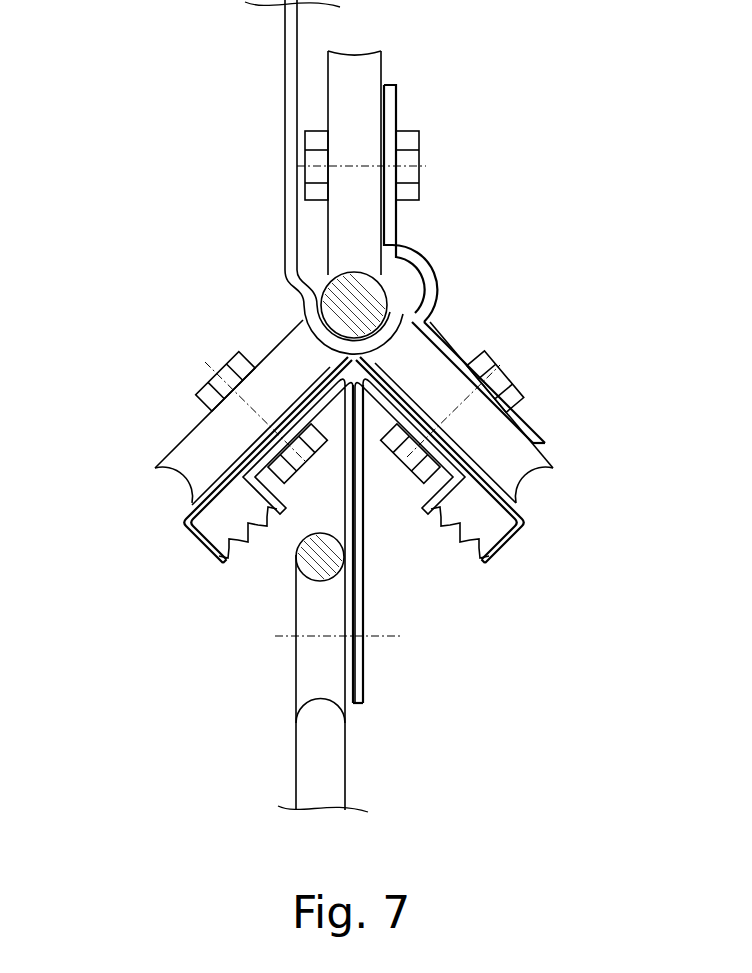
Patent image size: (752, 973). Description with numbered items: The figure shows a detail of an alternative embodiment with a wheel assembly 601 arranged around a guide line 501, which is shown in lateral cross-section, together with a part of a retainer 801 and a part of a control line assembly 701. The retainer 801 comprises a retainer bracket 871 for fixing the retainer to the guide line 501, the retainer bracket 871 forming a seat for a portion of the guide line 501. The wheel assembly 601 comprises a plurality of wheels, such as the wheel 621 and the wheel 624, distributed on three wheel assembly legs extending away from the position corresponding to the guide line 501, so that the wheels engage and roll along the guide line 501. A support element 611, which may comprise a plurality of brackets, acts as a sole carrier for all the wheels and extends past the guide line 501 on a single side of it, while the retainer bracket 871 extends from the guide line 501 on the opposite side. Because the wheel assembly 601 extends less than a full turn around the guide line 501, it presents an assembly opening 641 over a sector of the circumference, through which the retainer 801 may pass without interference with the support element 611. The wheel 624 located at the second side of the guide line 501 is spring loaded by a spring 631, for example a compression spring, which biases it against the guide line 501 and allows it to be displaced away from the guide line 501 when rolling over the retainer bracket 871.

The retainer bracket 871 is at (284, 64).
The retainer 801 is at (225, 186).
The assembly opening 641 is at (252, 272).
The wheel 621 is at (383, 55).
The support element 611 is at (397, 212).
The guide line 501 is at (368, 303).
The wheel assembly 601 is at (478, 320).
The wheel 624 is at (183, 440).
The spring 631 is at (243, 548).
The control line assembly 701 is at (263, 763).